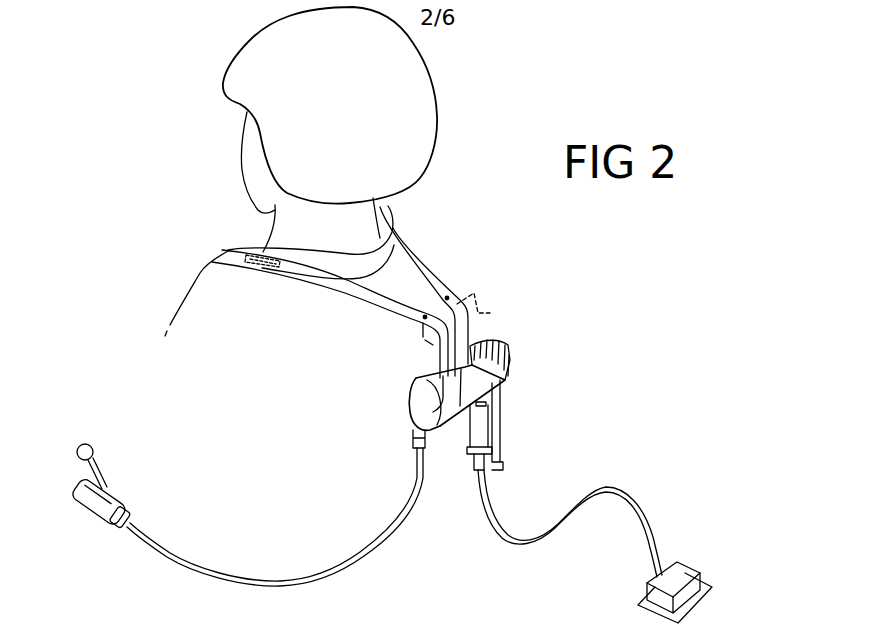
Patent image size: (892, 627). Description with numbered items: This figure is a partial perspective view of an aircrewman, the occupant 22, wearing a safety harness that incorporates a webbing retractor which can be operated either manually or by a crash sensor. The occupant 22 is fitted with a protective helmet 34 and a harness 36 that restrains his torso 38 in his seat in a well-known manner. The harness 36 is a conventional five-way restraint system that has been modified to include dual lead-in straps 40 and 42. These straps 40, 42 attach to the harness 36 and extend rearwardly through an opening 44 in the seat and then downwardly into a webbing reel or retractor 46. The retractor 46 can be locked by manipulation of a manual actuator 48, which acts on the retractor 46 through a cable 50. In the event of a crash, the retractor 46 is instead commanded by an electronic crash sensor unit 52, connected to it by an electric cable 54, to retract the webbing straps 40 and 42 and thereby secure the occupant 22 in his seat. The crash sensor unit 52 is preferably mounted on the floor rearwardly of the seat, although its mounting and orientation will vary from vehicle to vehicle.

The occupant 22 is at (447, 90).
The protective helmet 34 is at (274, 30).
The harness 36 is at (245, 254).
The torso 38 is at (186, 302).
The lead-in strap 40 is at (386, 302).
The lead-in strap 42 is at (432, 292).
The opening 44 is at (492, 313).
The webbing reel or retractor 46 is at (510, 358).
The manual actuator 48 is at (108, 484).
The cable 50 is at (425, 480).
The electronic crash sensor unit 52 is at (702, 584).
The electric cable 54 is at (508, 543).